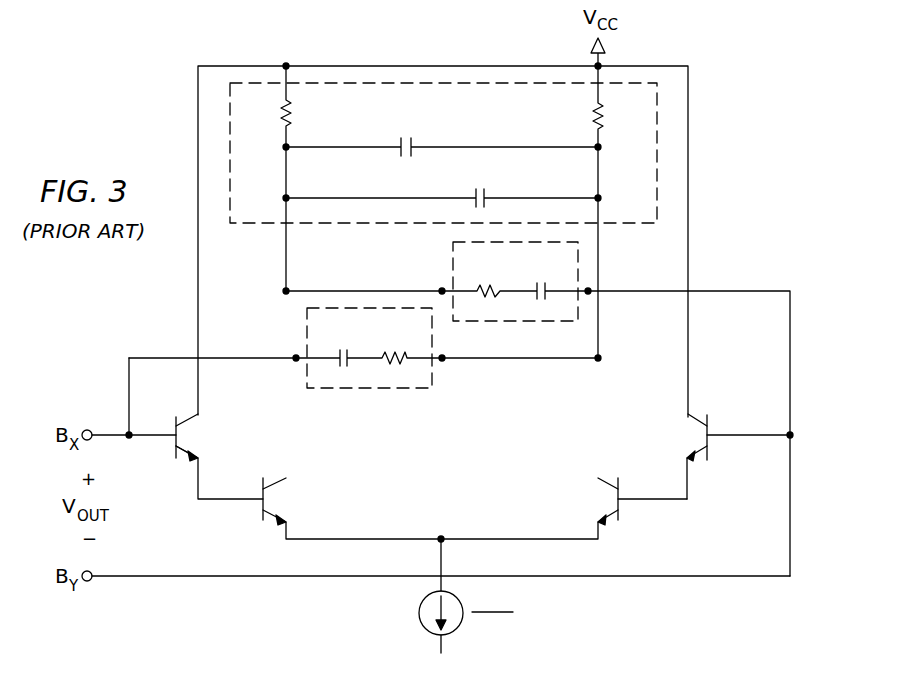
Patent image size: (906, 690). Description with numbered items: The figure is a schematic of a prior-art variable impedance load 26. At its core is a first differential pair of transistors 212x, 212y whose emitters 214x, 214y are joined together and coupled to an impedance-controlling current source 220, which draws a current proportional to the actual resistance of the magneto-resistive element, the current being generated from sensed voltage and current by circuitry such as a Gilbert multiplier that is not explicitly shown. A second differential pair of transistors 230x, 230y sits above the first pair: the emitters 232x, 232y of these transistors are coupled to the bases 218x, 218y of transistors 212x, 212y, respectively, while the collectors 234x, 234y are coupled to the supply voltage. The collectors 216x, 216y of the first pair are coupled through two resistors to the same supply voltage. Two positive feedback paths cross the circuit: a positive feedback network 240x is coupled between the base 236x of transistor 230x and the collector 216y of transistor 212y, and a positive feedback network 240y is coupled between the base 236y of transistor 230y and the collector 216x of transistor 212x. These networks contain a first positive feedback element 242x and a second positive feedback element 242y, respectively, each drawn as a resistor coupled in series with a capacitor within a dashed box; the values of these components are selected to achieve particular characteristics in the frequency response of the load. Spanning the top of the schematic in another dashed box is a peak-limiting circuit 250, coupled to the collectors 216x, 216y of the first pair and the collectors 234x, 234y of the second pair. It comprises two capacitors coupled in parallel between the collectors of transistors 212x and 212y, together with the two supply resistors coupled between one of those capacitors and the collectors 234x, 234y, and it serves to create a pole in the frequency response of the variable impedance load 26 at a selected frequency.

The variable impedance load 26 is at (722, 184).
The peak-limiting circuit 250 is at (257, 226).
The first positive feedback element 242x is at (453, 284).
The second positive feedback element 242y is at (368, 389).
The positive feedback network 240x is at (735, 291).
The positive feedback network 240y is at (170, 358).
The transistor 230y is at (187, 437).
The collector 234y is at (190, 420).
The base 236y is at (172, 442).
The emitter 232y is at (188, 462).
The transistor 212y is at (318, 499).
The collector 216y is at (268, 480).
The base 218y is at (262, 506).
The emitter 214y is at (272, 524).
The transistor 212x is at (568, 501).
The collector 216x is at (614, 480).
The base 218x is at (622, 506).
The emitter 214x is at (610, 524).
The transistor 230x is at (699, 437).
The collector 234x is at (702, 418).
The base 236x is at (712, 442).
The emitter 232x is at (710, 462).
The impedance-controlling current source 220 is at (419, 613).